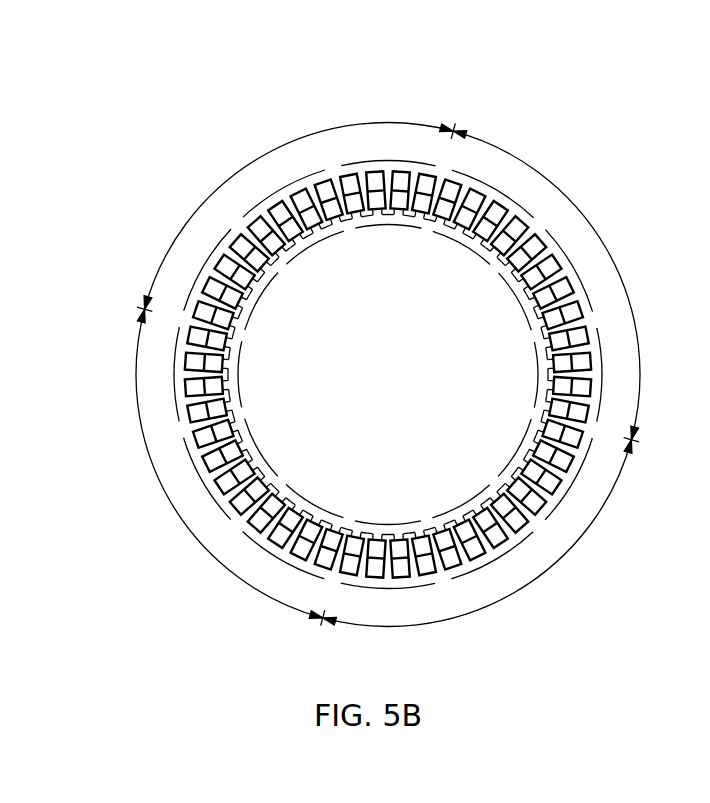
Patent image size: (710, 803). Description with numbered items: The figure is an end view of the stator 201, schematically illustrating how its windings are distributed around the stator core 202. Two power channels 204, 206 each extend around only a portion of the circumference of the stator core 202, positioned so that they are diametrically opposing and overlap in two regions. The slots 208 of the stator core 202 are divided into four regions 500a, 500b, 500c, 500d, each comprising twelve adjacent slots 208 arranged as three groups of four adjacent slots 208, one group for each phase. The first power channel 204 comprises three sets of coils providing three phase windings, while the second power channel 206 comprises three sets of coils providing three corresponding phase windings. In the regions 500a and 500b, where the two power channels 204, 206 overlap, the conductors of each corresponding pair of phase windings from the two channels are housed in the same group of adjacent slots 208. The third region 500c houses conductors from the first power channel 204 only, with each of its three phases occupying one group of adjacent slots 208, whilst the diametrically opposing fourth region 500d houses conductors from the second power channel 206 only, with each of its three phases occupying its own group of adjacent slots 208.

The stator 201 is at (393, 340).
The stator core 202 is at (384, 364).
The first power channel 204 is at (297, 193).
The second power channel 206 is at (527, 525).
The slots 208 is at (237, 425).
The first region of slots 500a is at (167, 492).
The second region of slots 500b is at (597, 227).
The third region of slots 500c is at (300, 138).
The fourth region of slots 500d is at (523, 588).